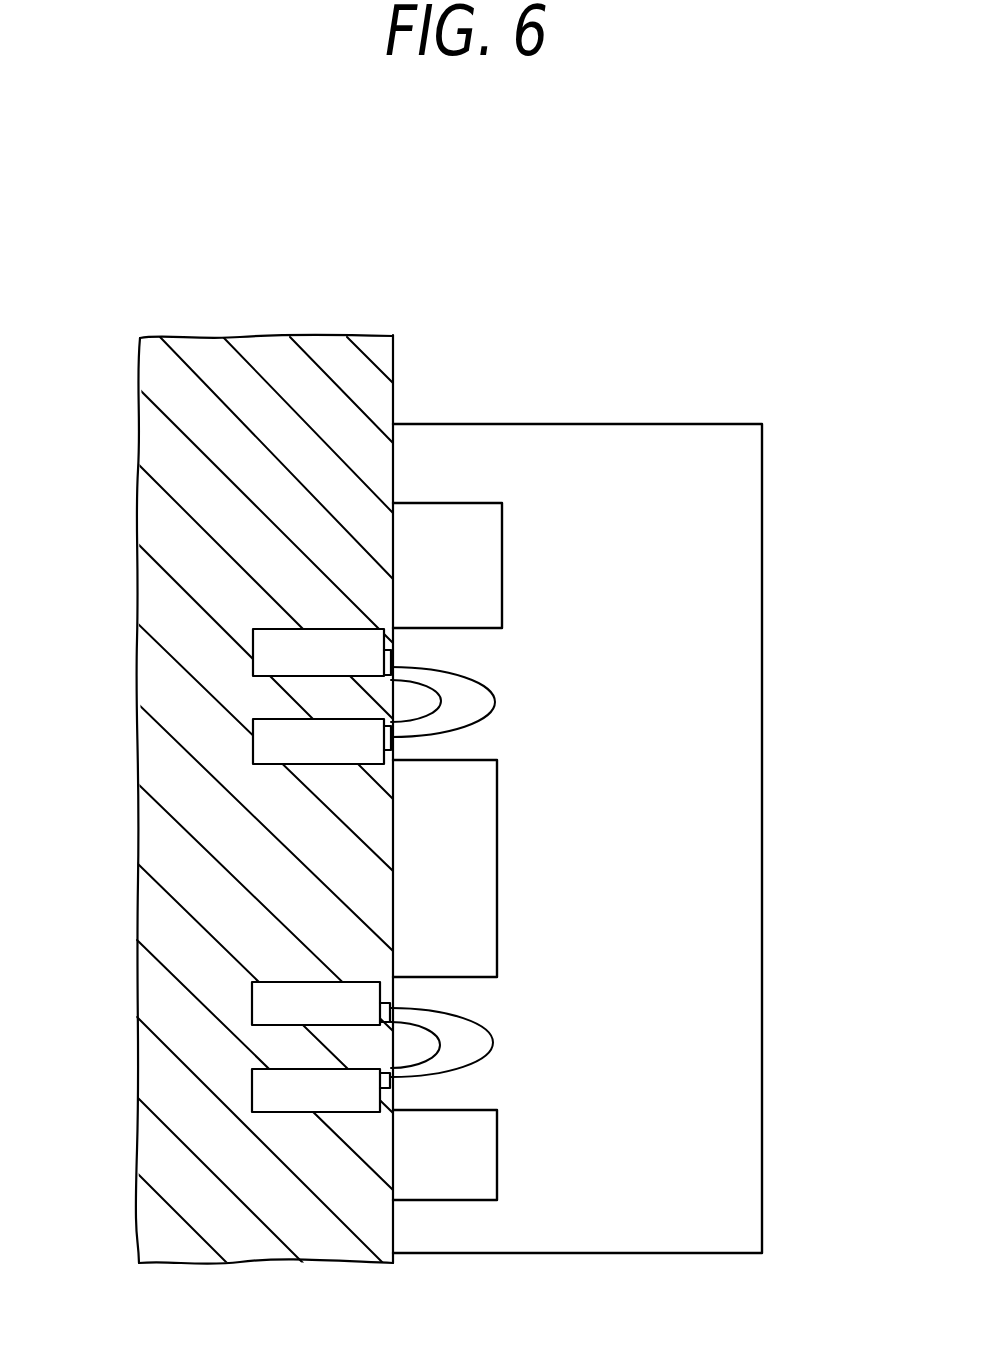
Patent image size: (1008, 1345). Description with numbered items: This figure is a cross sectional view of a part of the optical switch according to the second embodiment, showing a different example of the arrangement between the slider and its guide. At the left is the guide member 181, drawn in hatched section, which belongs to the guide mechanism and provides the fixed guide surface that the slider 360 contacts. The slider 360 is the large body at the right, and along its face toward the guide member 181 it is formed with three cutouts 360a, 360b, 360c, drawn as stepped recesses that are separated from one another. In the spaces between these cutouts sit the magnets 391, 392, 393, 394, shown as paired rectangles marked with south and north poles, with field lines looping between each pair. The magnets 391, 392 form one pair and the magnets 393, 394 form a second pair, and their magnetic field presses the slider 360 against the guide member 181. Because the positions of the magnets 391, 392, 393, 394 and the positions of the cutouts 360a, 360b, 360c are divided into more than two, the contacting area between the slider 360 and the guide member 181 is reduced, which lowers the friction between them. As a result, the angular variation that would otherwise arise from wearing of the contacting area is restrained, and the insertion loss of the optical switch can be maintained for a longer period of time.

The guide member 181 is at (257, 345).
The slider 360 is at (728, 510).
The cutout 360a is at (448, 512).
The cutout 360b is at (477, 873).
The cutout 360c is at (482, 1160).
The magnet 391 is at (272, 657).
The magnet 392 is at (272, 748).
The magnet 393 is at (272, 1007).
The magnet 394 is at (272, 1092).